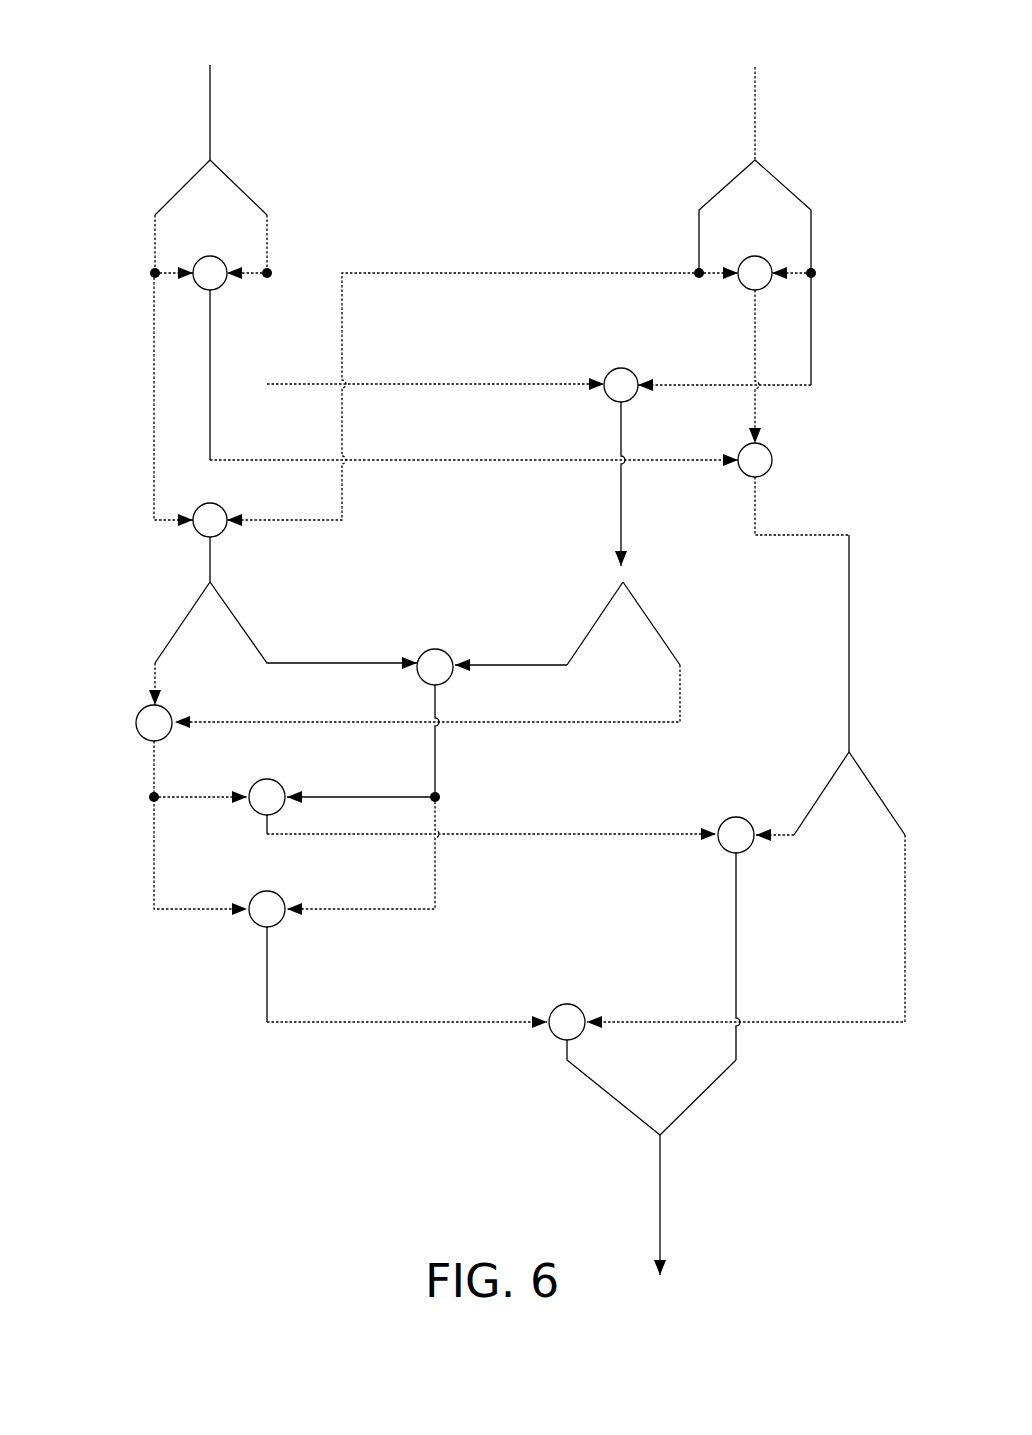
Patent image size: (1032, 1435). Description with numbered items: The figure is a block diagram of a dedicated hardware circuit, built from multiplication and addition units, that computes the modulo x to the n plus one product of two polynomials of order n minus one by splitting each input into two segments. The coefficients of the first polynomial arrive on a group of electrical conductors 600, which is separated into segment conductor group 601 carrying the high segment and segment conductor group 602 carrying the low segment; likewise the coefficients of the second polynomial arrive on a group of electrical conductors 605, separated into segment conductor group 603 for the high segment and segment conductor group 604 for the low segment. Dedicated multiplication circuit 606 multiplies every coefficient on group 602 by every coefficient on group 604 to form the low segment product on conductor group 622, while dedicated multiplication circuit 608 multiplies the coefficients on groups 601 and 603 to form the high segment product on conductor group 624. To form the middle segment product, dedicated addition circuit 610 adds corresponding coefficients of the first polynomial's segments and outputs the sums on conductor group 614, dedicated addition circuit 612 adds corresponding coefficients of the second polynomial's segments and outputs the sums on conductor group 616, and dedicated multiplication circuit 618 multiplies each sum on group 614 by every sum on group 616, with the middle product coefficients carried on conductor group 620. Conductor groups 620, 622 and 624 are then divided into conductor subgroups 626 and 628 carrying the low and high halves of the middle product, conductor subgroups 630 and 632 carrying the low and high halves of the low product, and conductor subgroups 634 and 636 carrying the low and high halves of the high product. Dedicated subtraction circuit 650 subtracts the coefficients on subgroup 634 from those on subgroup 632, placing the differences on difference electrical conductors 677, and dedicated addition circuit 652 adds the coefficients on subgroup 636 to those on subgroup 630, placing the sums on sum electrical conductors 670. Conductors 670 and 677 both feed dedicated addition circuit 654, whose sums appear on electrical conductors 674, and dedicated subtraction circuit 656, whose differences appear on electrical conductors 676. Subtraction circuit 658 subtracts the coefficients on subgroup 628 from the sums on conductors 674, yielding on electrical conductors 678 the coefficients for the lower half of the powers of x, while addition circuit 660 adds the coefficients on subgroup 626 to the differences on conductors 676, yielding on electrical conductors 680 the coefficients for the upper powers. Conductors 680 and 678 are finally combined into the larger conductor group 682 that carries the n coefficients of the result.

The group of electrical conductors for polynomial A(x) 600 is at (210, 100).
The segment conductor group for segment A1 601 is at (190, 178).
The segment conductor group for segment A0 602 is at (233, 176).
The segment conductor group for segment B1 603 is at (735, 170).
The segment conductor group for segment B0 604 is at (773, 175).
The group of electrical conductors for polynomial B(x) 605 is at (755, 100).
The dedicated multiplication circuit 606 is at (610, 372).
The dedicated multiplication circuit 608 is at (207, 503).
The dedicated addition circuit 610 is at (210, 256).
The dedicated addition circuit 612 is at (755, 256).
The conductor group 614 is at (210, 365).
The conductor group 616 is at (755, 310).
The dedicated multiplication circuit 618 is at (772, 460).
The conductor group 620 is at (757, 505).
The conductor group 622 is at (621, 518).
The conductor group 624 is at (210, 550).
The conductor subgroup 626 is at (868, 778).
The conductor subgroup 628 is at (828, 778).
The conductor subgroup 630 is at (640, 600).
The conductor subgroup 632 is at (595, 622).
The conductor subgroup 634 is at (232, 602).
The conductor subgroup 636 is at (197, 602).
The dedicated subtraction circuit 650 is at (437, 650).
The dedicated addition circuit 652 is at (136, 723).
The dedicated addition circuit 654 is at (255, 782).
The dedicated subtraction circuit 656 is at (252, 893).
The subtraction circuit 658 is at (727, 818).
The addition circuit 660 is at (578, 1005).
The sum electrical conductors 670 is at (154, 818).
The electrical conductors 674 is at (267, 832).
The electrical conductors 676 is at (267, 975).
The difference electrical conductors 677 is at (435, 700).
The electrical conductors 678 is at (737, 880).
The electrical conductors 680 is at (565, 1045).
The conductor group 682 is at (662, 1208).